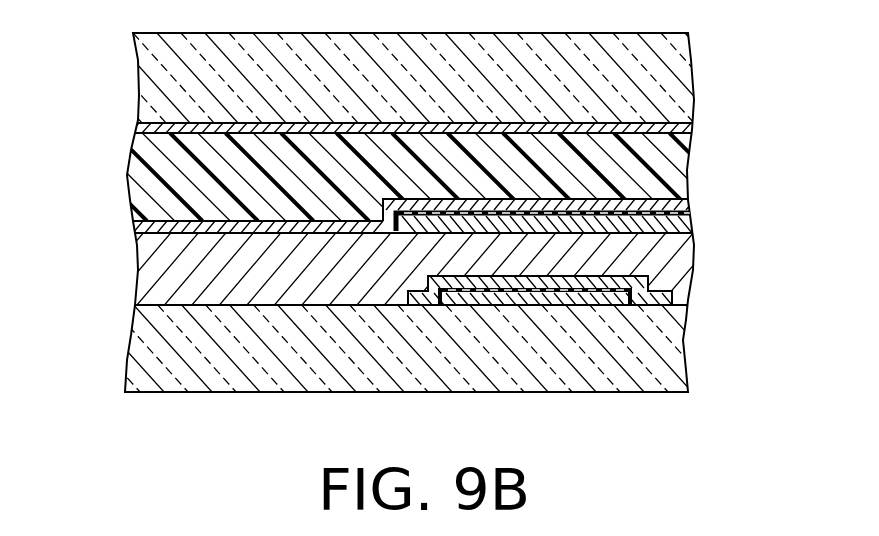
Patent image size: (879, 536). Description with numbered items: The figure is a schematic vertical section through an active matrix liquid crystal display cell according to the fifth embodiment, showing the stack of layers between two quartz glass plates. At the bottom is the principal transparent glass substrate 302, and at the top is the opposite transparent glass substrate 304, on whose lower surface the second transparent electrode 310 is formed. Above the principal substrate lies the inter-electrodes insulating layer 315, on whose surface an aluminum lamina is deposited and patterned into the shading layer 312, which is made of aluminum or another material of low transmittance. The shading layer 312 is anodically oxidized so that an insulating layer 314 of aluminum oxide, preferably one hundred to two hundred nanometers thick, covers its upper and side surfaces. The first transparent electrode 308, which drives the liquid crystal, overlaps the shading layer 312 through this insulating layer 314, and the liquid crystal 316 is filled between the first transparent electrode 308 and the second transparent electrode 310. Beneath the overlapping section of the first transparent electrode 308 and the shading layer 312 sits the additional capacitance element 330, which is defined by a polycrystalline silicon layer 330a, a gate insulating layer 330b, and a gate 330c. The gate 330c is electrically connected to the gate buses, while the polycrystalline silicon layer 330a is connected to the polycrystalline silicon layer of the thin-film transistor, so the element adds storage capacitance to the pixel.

The principal transparent glass substrate 302 is at (134, 353).
The opposite transparent glass substrate 304 is at (156, 93).
The first transparent electrode 308 is at (137, 223).
The second transparent electrode 310 is at (694, 127).
The shading layer 312 is at (692, 228).
The insulating layer 314 is at (690, 206).
The inter-electrodes insulating layer 315 is at (137, 287).
The liquid crystal 316 is at (688, 163).
The additional capacitance element 330 is at (466, 292).
The polycrystalline silicon layer 330a is at (534, 292).
The gate insulating layer 330b is at (672, 300).
The gate 330c is at (672, 278).